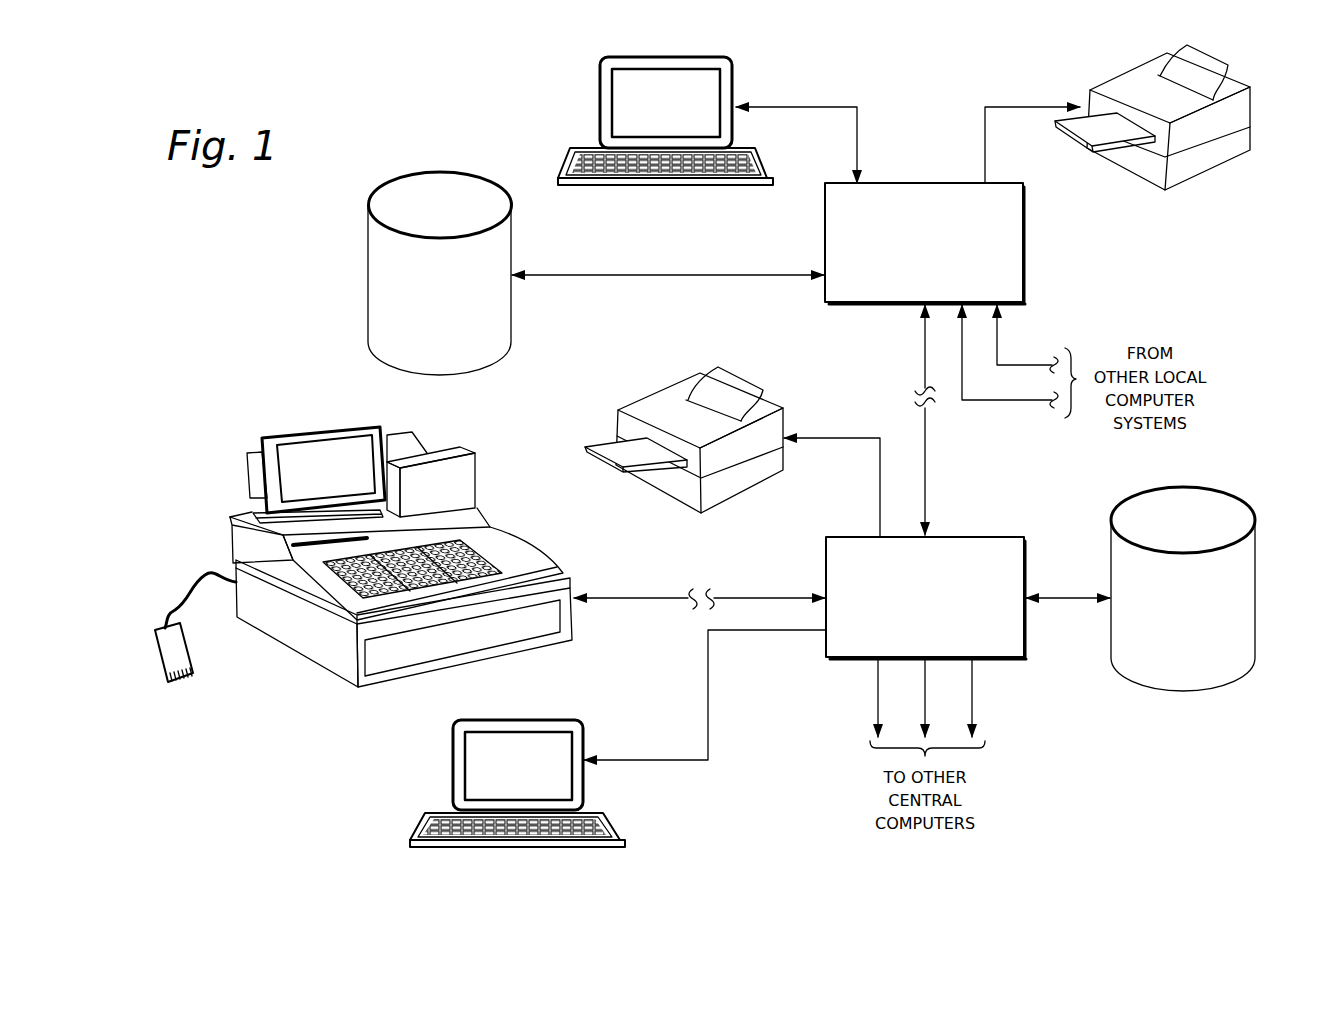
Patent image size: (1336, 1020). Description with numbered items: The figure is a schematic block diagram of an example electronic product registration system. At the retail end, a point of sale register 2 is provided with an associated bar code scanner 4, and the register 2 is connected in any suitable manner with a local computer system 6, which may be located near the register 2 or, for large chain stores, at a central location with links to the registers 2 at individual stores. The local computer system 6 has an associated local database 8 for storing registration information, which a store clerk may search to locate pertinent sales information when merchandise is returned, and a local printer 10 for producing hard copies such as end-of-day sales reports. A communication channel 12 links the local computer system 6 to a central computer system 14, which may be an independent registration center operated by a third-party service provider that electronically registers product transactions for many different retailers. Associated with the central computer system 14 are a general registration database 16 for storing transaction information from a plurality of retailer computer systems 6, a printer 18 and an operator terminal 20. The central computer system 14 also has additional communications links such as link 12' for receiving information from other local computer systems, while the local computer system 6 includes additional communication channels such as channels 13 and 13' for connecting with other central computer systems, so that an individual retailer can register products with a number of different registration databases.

The point of sale register 2 is at (363, 557).
The bar code scanner 4 is at (183, 660).
The local computer system 6 is at (1007, 660).
The local database 8 is at (1110, 560).
The local printer 10 is at (643, 408).
The communication channel 12 is at (683, 576).
The additional communications link 12' is at (1010, 373).
The additional communication channel 13 is at (845, 697).
The additional communication channel 13' is at (876, 697).
The central computer system 14 is at (1025, 222).
The general registration database 16 is at (368, 322).
The printer 18 is at (1113, 85).
The operator terminal 20 is at (574, 109).